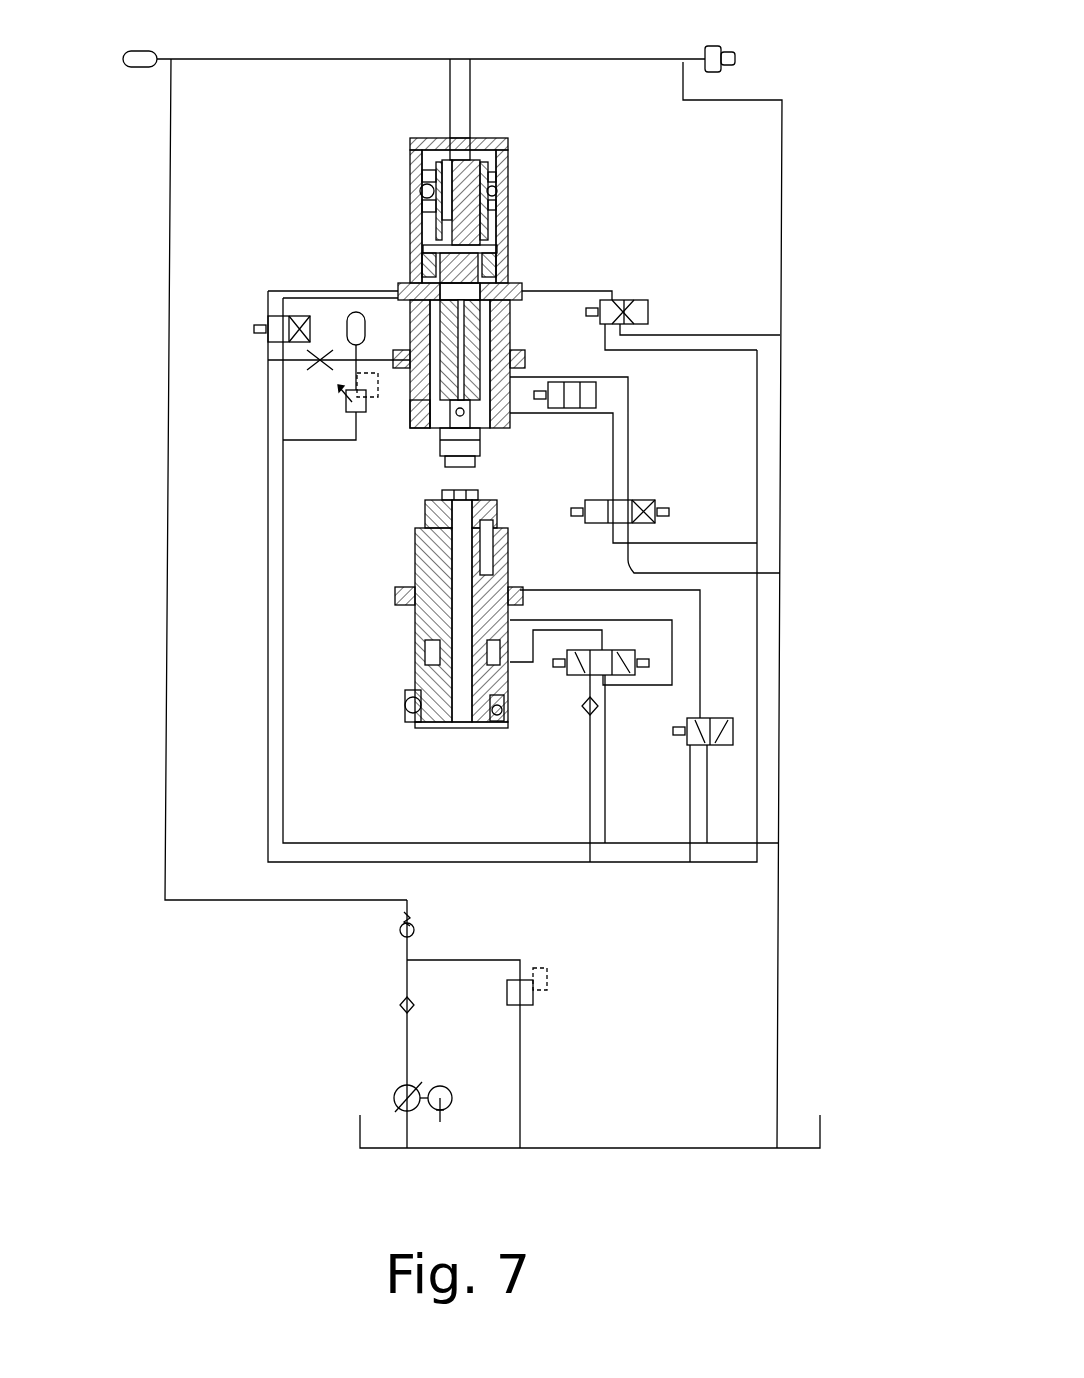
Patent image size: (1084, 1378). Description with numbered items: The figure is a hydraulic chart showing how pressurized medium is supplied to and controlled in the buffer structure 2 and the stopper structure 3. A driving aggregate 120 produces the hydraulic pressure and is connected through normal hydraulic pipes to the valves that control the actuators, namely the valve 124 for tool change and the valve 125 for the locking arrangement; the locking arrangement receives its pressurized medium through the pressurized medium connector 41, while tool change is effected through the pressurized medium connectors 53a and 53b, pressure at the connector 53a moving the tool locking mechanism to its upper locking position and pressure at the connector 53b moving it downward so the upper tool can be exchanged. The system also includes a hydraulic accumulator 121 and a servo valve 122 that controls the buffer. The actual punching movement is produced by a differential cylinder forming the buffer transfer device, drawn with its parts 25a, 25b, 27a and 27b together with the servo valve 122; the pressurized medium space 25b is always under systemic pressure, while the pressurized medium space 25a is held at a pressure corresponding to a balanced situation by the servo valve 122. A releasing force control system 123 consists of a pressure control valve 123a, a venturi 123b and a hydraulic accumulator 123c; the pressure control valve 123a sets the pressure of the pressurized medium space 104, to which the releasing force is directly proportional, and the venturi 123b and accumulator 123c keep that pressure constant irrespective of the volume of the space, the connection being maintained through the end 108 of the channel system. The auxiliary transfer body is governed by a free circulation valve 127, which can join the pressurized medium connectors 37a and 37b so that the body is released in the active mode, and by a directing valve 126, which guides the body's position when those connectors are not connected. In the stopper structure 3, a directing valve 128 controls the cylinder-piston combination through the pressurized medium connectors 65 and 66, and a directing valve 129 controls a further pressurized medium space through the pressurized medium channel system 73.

The buffer structure 2 is at (458, 360).
The stopper structure 3 is at (502, 631).
The pressurized medium space 25a is at (430, 215).
The pressurized medium space 25b is at (426, 186).
The differential cylinder part 27a is at (472, 140).
The differential cylinder part 27b is at (451, 140).
The pressurized medium connector 37a is at (514, 376).
The pressurized medium connector 37b is at (516, 428).
The pressurized medium connector 41 is at (512, 291).
The pressurized medium connector 53a is at (432, 290).
The pressurized medium connector 53b is at (438, 250).
The pressurized medium connector 65 is at (506, 640).
The pressurized medium connector 66 is at (447, 722).
The pressurized medium channel system 73 is at (522, 588).
The pressurized medium space 104 is at (436, 432).
The end of channel system 108 is at (408, 398).
The driving aggregate 120 is at (350, 1090).
The hydraulic accumulator 121 is at (140, 58).
The servo valve 122 is at (713, 60).
The releasing force control system 123 is at (477, 548).
The pressure control valve 123a is at (350, 407).
The venturi 123b is at (322, 362).
The hydraulic accumulator 123c is at (353, 312).
The valve for tool change 124 is at (272, 322).
The valve for the locking arrangement 125 is at (648, 304).
The directing valve 126 is at (655, 506).
The free circulation valve 127 is at (594, 386).
The directing valve 128 is at (625, 676).
The directing valve 129 is at (724, 722).